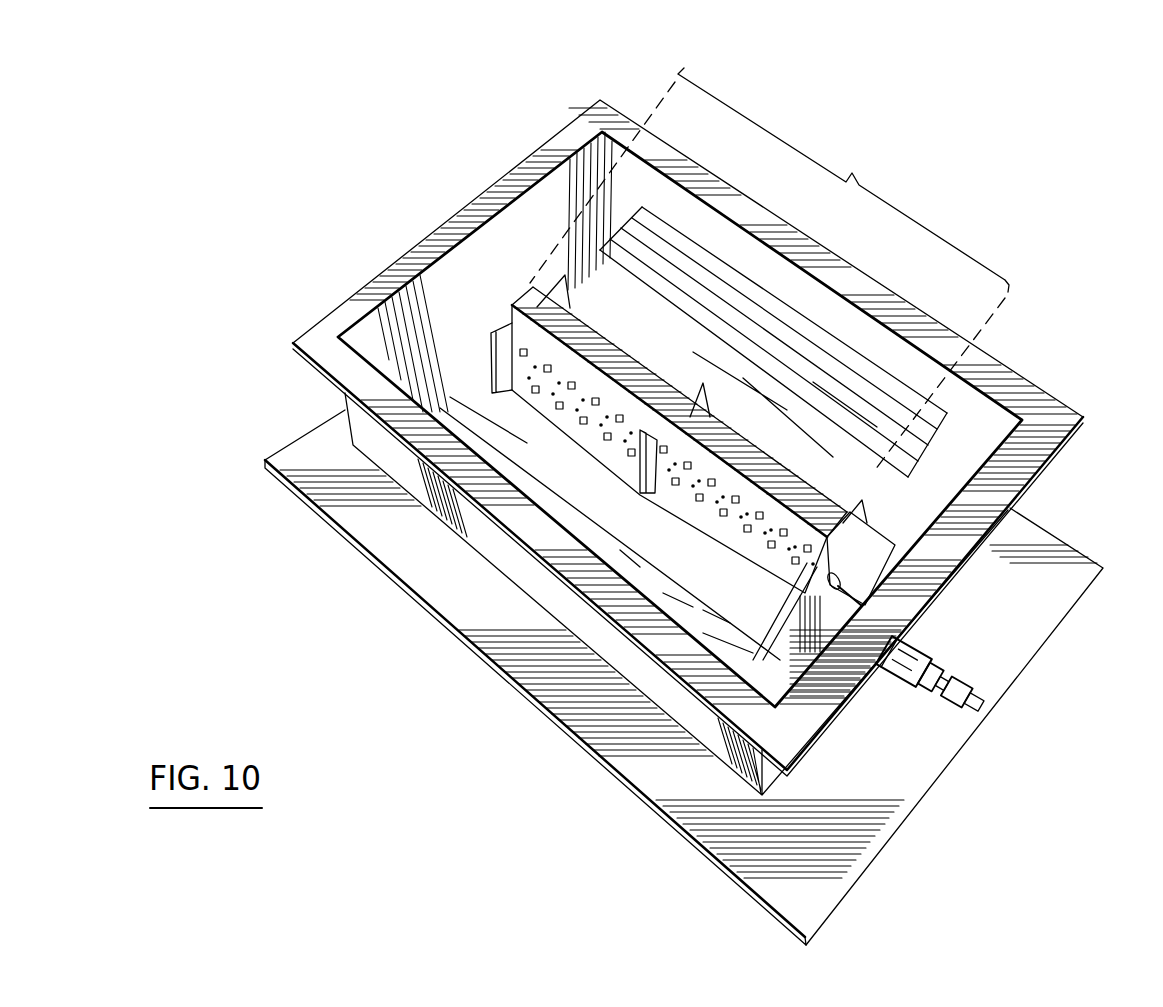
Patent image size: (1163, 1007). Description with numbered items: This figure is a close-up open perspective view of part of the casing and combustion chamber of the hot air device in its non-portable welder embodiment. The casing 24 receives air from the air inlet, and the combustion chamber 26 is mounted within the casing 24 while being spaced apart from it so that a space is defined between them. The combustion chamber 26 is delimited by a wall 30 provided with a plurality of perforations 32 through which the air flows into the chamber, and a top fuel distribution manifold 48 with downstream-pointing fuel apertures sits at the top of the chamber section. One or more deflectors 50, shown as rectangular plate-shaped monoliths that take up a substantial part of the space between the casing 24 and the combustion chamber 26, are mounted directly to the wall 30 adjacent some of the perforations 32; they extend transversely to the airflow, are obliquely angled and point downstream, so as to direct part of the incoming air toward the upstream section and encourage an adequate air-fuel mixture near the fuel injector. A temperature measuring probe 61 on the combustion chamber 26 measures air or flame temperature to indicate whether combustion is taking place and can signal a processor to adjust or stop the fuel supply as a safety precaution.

The casing 24 is at (347, 407).
The combustion chamber 26 is at (769, 269).
The wall 30 is at (738, 513).
The perforations 32 is at (563, 382).
The top fuel distribution manifold 48 is at (637, 372).
The deflectors 50 is at (837, 362).
The temperature measuring probe 61 is at (840, 593).